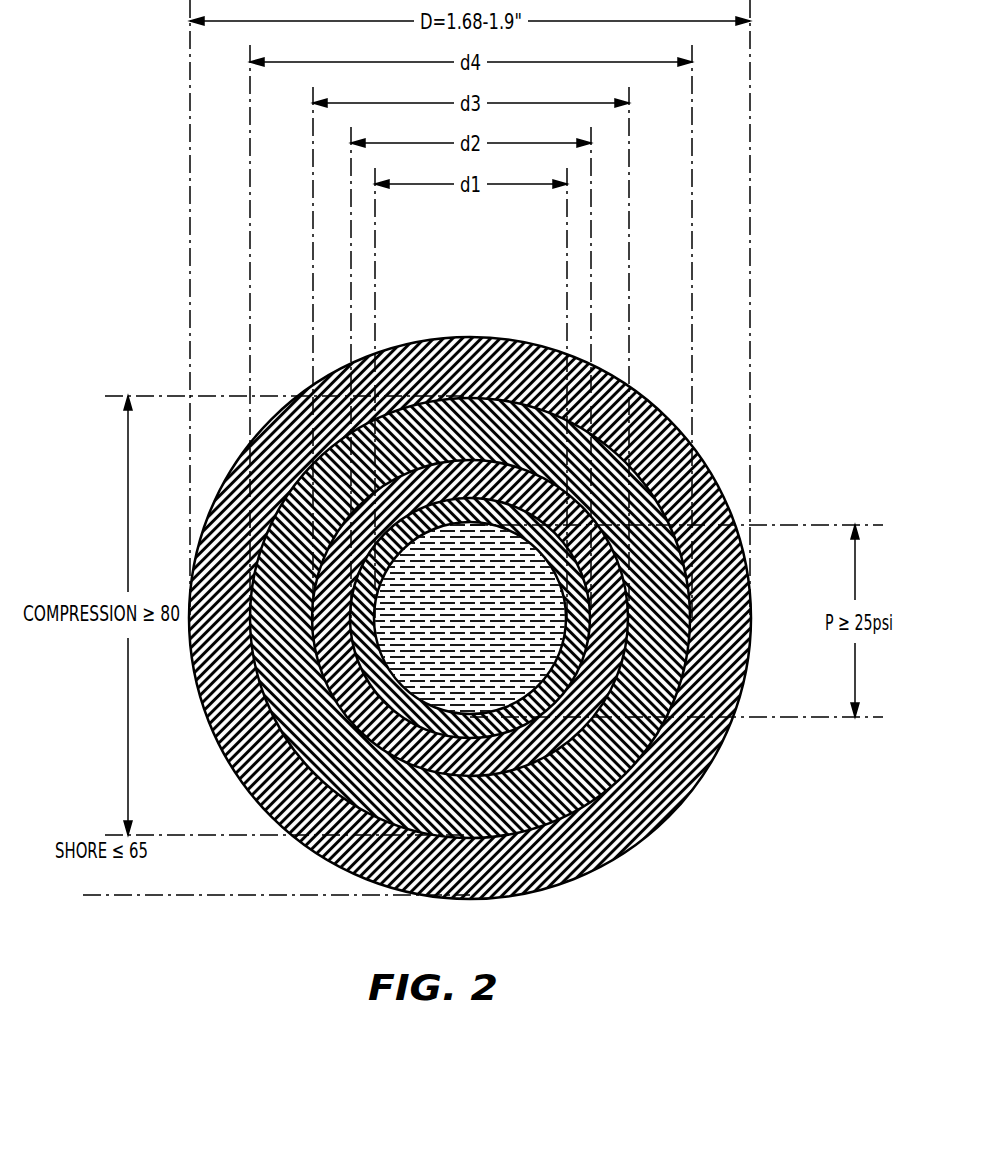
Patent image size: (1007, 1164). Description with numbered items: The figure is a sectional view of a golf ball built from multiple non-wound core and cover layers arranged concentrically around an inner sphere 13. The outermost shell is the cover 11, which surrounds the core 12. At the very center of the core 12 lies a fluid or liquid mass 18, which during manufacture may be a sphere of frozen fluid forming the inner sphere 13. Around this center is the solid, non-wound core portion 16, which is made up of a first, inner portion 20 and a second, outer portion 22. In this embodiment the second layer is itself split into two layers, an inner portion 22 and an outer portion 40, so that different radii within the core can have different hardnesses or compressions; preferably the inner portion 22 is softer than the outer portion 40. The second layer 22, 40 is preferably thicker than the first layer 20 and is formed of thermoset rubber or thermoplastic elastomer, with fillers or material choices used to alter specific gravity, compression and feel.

The cover 11 is at (330, 838).
The core 12 is at (697, 615).
The inner sphere 13 is at (647, 455).
The non-wound core portion 16 is at (633, 733).
The fluid mass at the center 18 is at (345, 690).
The first inner portion 20 is at (425, 650).
The second outer portion 22 is at (360, 590).
The outer portion of the second layer 40 is at (700, 525).